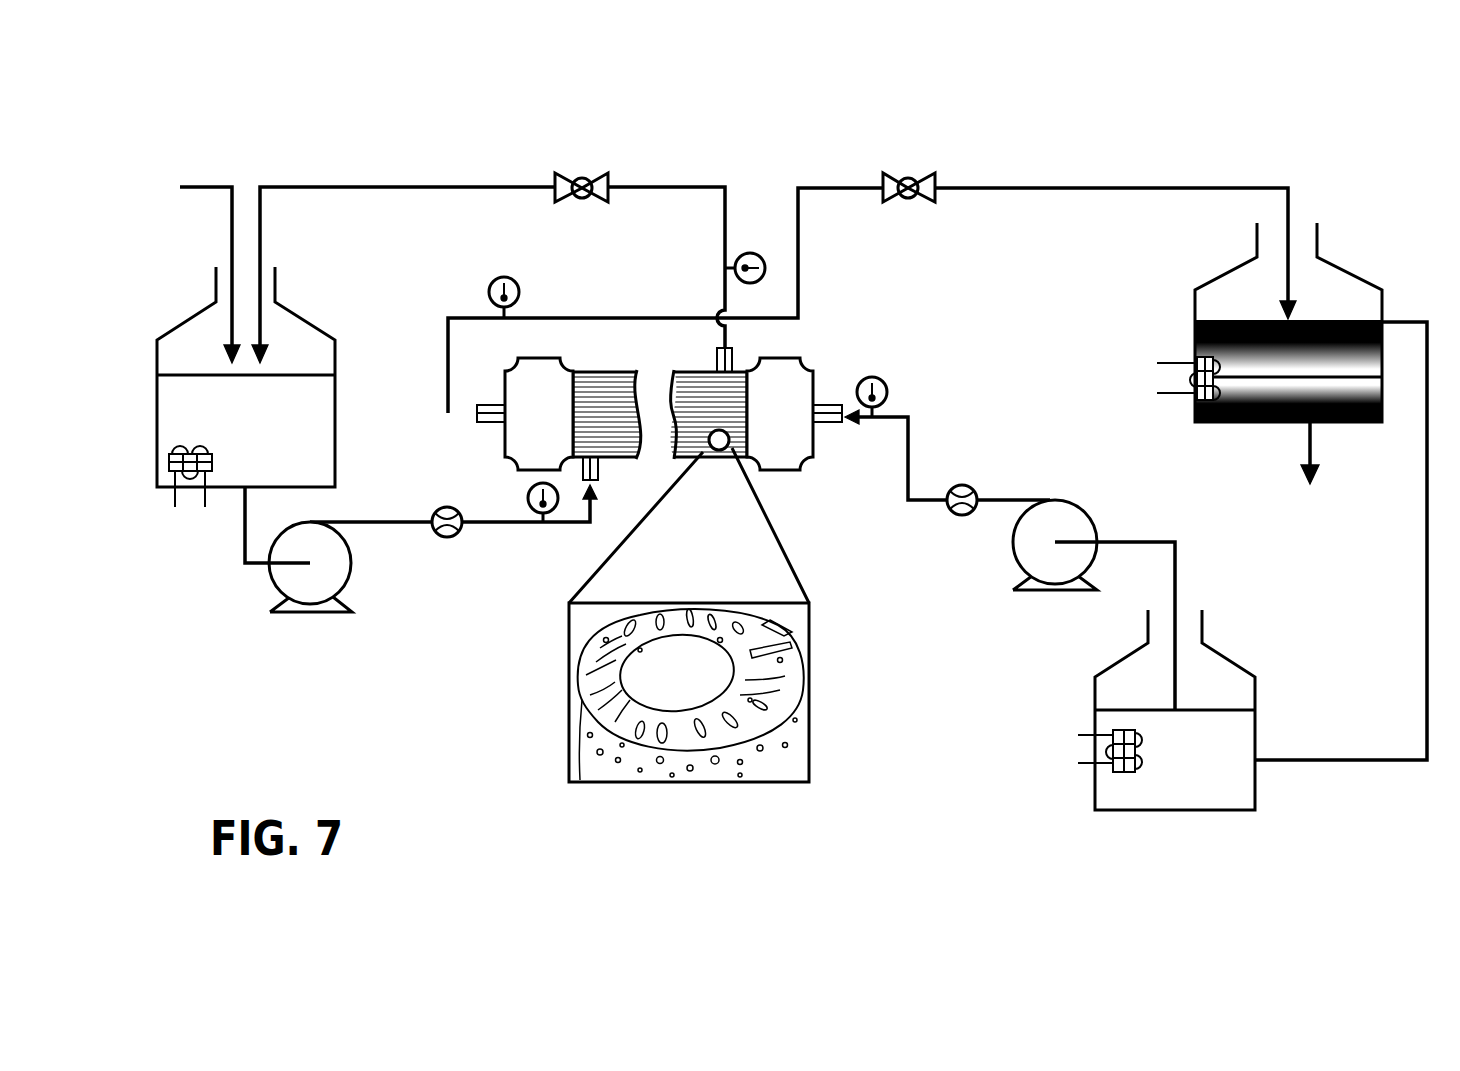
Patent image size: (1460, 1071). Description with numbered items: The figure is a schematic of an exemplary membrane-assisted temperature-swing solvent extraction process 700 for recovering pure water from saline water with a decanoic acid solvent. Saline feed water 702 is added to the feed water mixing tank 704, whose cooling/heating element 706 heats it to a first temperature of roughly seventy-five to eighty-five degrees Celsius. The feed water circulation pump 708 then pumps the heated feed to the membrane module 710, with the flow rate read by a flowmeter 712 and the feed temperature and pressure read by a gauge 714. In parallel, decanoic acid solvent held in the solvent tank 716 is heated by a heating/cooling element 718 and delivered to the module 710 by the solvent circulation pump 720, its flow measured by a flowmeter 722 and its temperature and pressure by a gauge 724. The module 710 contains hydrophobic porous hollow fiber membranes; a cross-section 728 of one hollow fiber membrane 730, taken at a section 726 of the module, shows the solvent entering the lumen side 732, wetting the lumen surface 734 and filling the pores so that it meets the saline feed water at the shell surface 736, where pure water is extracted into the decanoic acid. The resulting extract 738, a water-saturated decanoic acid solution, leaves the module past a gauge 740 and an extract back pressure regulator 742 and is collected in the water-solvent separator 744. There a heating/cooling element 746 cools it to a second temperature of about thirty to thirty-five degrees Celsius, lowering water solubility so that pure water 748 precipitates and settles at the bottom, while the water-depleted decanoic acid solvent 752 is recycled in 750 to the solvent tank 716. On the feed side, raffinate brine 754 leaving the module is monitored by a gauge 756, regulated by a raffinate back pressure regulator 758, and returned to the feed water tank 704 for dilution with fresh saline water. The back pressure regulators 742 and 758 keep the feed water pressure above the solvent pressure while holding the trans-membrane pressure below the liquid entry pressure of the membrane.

The membrane-assisted temperature-swing solvent extraction process 700 is at (1342, 150).
The saline feed water 702 is at (138, 167).
The feed water mixing tank 704 is at (158, 410).
The cooling/heating element 706 is at (128, 572).
The feed water circulation pump 708 is at (365, 638).
The membrane module 710 is at (513, 448).
The flowmeter 712 is at (447, 570).
The gauge 714 is at (528, 500).
The solvent tank 716 is at (1257, 795).
The heating/cooling element 718 is at (1032, 780).
The solvent circulation pump 720 is at (992, 608).
The flowmeter 722 is at (962, 482).
The gauge 724 is at (880, 370).
The section 726 is at (722, 455).
The cross-section 728 is at (585, 622).
The hollow fiber membrane 730 is at (580, 700).
The lumen side 732 is at (660, 658).
The lumen surface 734 is at (730, 637).
The shell surface 736 is at (808, 675).
The extract 738 is at (1115, 158).
The gauge 740 is at (489, 285).
The extract back pressure regulator 742 is at (895, 252).
The water-solvent separator 744 is at (1107, 310).
The heating/cooling element 746 is at (1123, 427).
The pure water 748 is at (1338, 485).
The recycle 750 is at (1425, 557).
The decanoic acid solvent 752 is at (1327, 360).
The raffinate brine 754 is at (388, 155).
The gauge 756 is at (748, 250).
The raffinate back pressure regulator 758 is at (583, 168).